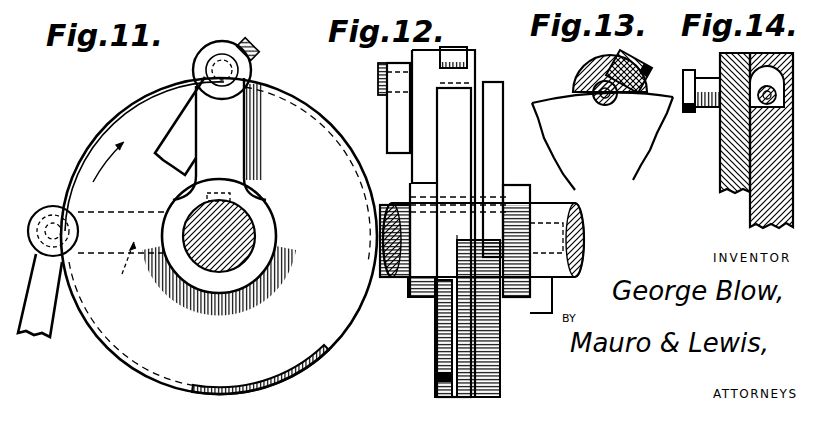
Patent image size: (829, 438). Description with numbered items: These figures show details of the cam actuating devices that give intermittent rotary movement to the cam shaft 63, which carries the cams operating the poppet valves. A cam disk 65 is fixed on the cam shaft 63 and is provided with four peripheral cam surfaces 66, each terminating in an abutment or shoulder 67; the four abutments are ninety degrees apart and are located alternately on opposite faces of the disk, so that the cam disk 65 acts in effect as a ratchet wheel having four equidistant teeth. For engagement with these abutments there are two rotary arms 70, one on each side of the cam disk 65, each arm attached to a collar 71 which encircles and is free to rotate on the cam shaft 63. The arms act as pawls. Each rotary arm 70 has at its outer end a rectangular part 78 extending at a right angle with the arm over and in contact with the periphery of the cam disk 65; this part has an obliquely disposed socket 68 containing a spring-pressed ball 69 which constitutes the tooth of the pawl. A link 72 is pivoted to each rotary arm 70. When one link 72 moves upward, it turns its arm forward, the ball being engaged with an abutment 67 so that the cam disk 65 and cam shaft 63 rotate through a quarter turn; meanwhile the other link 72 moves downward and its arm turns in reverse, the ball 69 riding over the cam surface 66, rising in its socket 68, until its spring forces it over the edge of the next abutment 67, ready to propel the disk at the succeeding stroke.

In FIG. 11, the cam shaft 63 is at (247, 213).
In FIG. 12, the cam shaft 63 is at (576, 233).
In FIG. 11, the cam disk 65 is at (219, 236).
In FIG. 12, the cam disk 65 is at (520, 178).
In FIG. 13, the cam disk 65 is at (640, 150).
In FIG. 14, the cam disk 65 is at (762, 199).
In FIG. 11, the peripheral cam surface 66 is at (157, 97).
In FIG. 12, the peripheral cam surface 66 is at (493, 170).
In FIG. 13, the peripheral cam surface 66 is at (568, 103).
In FIG. 11, the abutment 67 is at (203, 388).
In FIG. 12, the abutment 67 is at (490, 260).
In FIG. 13, the abutment 67 is at (622, 98).
In FIG. 13, the socket 68 is at (621, 51).
In FIG. 14, the socket 68 is at (786, 75).
In FIG. 13, the spring-pressed ball 69 is at (604, 107).
In FIG. 14, the spring-pressed ball 69 is at (780, 96).
In FIG. 11, the rotary arm 70 is at (229, 139).
In FIG. 12, the rotary arm 70 is at (422, 166).
In FIG. 13, the rotary arm 70 is at (584, 81).
In FIG. 14, the rotary arm 70 is at (735, 150).
In FIG. 11, the collar 71 is at (268, 234).
In FIG. 12, the collar 71 is at (456, 251).
In FIG. 11, the link 72 is at (171, 141).
In FIG. 12, the link 72 is at (396, 125).
In FIG. 11, the rectangular part 78 is at (219, 45).
In FIG. 12, the rectangular part 78 is at (475, 72).
In FIG. 13, the rectangular part 78 is at (591, 64).
In FIG. 14, the rectangular part 78 is at (760, 67).